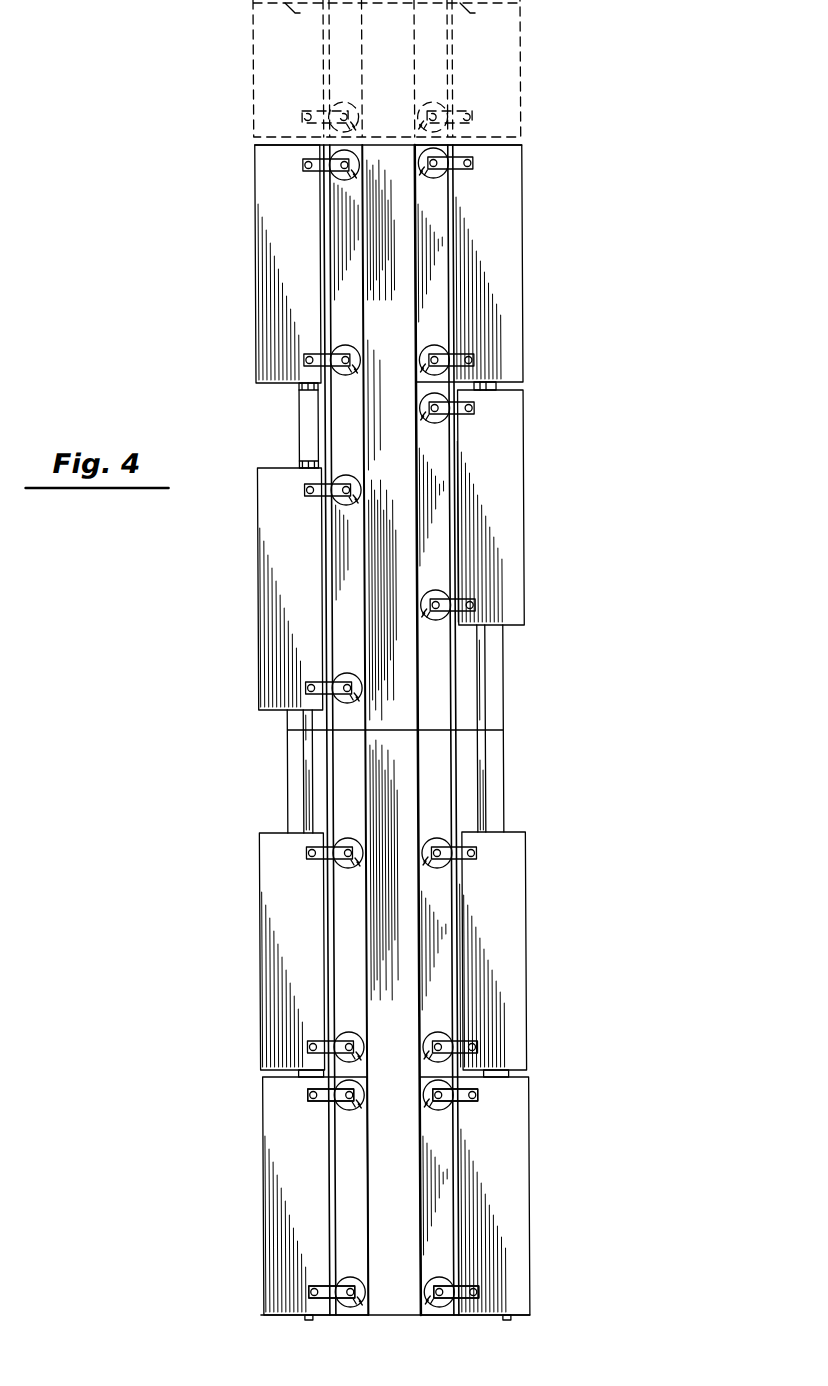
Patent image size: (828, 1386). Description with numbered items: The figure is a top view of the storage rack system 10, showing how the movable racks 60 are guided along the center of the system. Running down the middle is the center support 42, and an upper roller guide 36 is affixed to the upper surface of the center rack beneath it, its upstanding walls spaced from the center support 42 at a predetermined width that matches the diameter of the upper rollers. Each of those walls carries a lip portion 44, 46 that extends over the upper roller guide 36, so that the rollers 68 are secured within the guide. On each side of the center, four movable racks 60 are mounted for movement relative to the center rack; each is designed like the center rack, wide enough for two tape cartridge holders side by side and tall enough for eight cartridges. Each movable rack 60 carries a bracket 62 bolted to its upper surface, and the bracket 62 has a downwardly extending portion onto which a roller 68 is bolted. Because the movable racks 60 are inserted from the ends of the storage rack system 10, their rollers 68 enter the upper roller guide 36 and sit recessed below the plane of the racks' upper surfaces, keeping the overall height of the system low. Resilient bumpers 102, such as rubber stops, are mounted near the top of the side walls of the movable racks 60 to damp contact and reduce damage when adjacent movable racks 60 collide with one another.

The storage rack system 10 is at (592, 614).
The upper roller guide 36 is at (383, 1326).
The center support 42 is at (393, 1320).
The lip portion 44 is at (327, 1320).
The lip portion 46 is at (455, 1320).
The movable rack 60 is at (254, 222).
The bracket 62 is at (332, 1102).
The roller 68 is at (343, 346).
The resilient bumper 102 is at (285, 462).